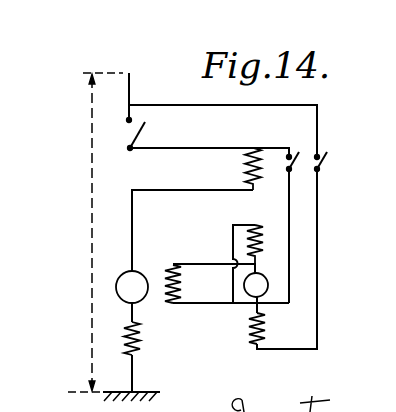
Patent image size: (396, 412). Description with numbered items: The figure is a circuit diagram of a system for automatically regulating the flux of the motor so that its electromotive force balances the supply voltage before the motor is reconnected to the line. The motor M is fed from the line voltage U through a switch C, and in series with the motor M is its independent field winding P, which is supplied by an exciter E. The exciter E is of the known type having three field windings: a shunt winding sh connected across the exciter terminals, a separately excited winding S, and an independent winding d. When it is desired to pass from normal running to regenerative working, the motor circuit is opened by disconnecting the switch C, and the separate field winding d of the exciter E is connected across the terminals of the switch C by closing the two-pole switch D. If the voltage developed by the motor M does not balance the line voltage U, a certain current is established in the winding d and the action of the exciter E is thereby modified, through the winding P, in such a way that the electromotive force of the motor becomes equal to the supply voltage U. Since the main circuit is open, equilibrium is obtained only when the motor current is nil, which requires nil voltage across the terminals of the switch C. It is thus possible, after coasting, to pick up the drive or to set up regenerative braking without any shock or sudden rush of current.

The line voltage U is at (95, 232).
The switch C is at (126, 134).
The separately excited winding S is at (244, 169).
The two-pole switch D is at (315, 163).
The shunt winding sh is at (266, 244).
The independent field winding P is at (181, 284).
The exciter E is at (256, 285).
The motor M is at (132, 287).
The independent winding d is at (245, 329).